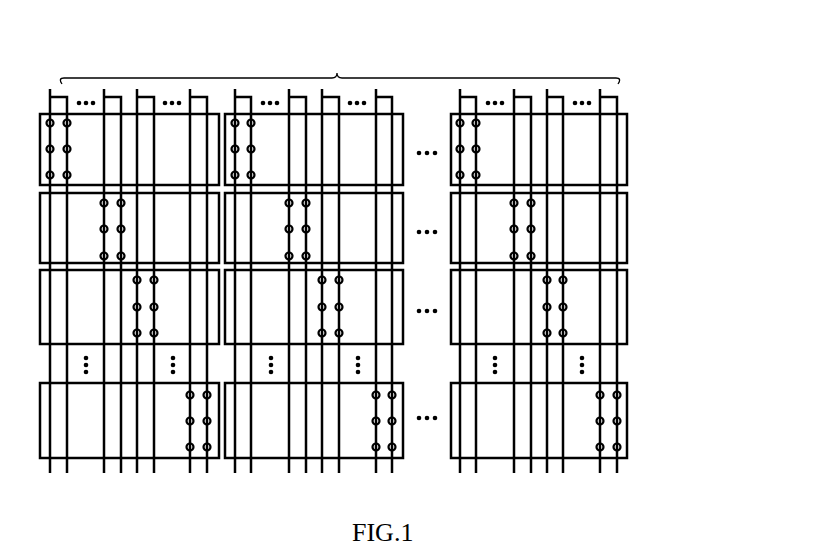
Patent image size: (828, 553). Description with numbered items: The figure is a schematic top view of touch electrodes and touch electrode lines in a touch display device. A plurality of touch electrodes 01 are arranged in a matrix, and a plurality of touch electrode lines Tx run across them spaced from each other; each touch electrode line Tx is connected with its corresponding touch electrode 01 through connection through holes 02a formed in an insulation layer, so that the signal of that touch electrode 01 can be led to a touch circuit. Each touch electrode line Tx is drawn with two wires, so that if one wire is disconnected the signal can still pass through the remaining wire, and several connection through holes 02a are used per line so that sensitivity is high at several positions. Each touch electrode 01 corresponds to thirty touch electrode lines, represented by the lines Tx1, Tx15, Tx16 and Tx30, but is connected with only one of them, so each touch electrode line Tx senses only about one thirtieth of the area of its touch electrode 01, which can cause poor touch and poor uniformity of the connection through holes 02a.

The touch electrode 01 is at (627, 140).
The connection through hole 02a is at (534, 228).
The touch electrode line Tx1 is at (50, 85).
The touch electrode line Tx15 is at (113, 65).
The touch electrode line Tx16 is at (137, 85).
The touch electrode line Tx30 is at (190, 85).
The touch electrode line Tx is at (339, 69).